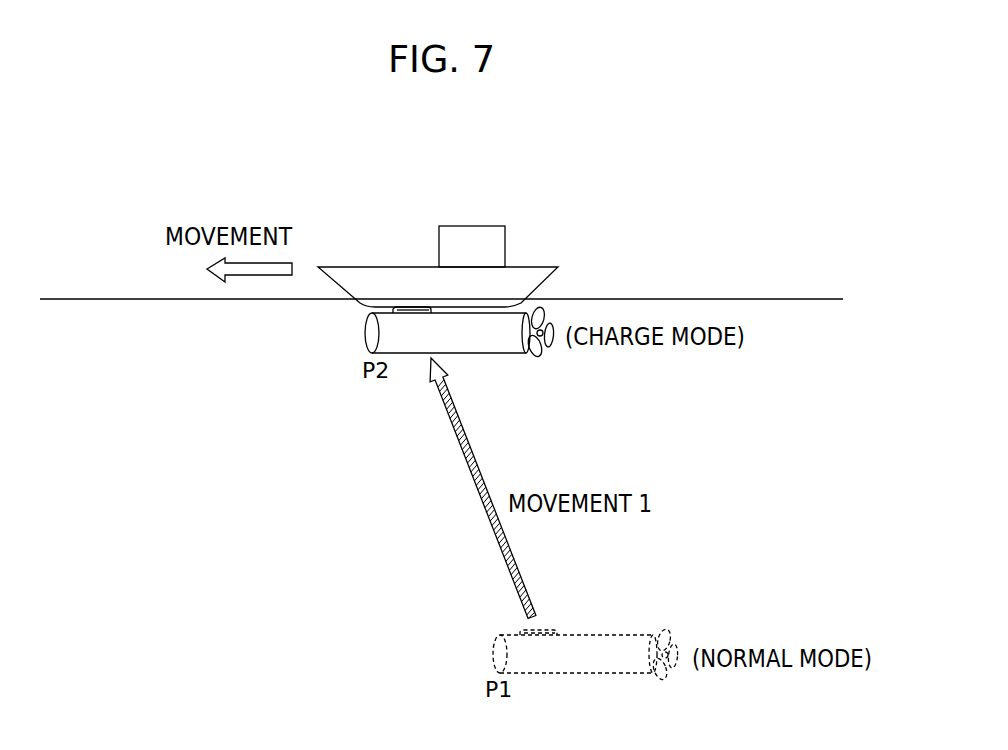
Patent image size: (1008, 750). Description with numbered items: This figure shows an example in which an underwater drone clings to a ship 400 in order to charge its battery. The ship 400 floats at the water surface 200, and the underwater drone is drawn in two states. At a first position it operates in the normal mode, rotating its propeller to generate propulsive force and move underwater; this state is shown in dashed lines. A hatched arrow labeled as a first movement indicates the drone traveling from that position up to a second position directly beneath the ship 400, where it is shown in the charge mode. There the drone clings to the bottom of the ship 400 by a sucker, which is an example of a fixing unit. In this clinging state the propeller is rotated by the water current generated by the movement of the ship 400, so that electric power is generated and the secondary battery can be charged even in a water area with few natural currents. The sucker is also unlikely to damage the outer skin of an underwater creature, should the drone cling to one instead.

The water surface 200 is at (792, 298).
The ship 400 is at (372, 267).